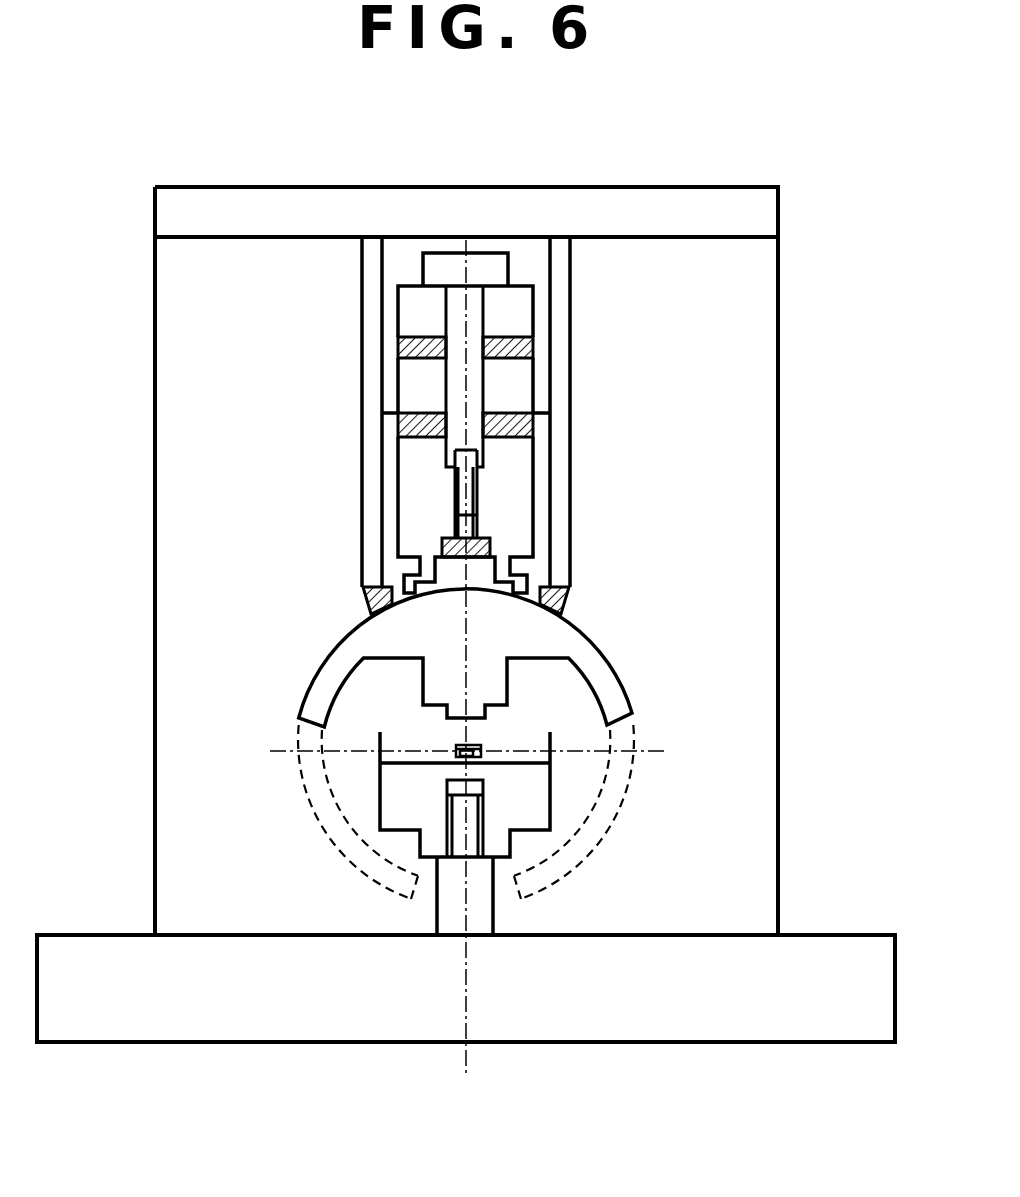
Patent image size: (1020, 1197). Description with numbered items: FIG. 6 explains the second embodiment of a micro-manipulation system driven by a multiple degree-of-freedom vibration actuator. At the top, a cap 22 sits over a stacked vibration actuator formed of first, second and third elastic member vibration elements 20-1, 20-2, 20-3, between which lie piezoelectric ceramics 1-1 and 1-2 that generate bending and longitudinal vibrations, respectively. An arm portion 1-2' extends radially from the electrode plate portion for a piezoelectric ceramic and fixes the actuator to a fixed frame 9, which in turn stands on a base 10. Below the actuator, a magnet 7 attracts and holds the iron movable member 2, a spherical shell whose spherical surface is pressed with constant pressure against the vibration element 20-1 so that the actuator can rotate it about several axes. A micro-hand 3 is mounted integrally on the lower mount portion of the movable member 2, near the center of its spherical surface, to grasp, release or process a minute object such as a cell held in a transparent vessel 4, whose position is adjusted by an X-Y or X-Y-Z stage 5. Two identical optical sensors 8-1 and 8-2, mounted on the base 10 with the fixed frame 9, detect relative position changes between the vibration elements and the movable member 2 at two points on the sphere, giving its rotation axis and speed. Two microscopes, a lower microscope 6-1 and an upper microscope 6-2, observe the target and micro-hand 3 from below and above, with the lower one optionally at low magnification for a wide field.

The piezoelectric ceramic 1-1 is at (527, 347).
The piezoelectric ceramic 1-2 is at (267, 423).
The arm portion 1-2' is at (668, 430).
The movable member 2 is at (335, 670).
The micro-hand 3 is at (473, 755).
The vessel 4 is at (380, 738).
The X-Y or X-Y-Z stage 5 is at (407, 818).
The lower microscope 6-1 is at (460, 788).
The upper microscope 6-2 is at (490, 753).
The magnet 7 is at (440, 546).
The optical sensor 8-1 is at (363, 602).
The optical sensor 8-2 is at (571, 595).
The fixed frame 9 is at (558, 308).
The base 10 is at (781, 1030).
The first elastic member vibration element 20-1 is at (517, 487).
The second elastic member vibration element 20-2 is at (517, 385).
The third elastic member vibration element 20-3 is at (417, 313).
The cap 22 is at (493, 266).